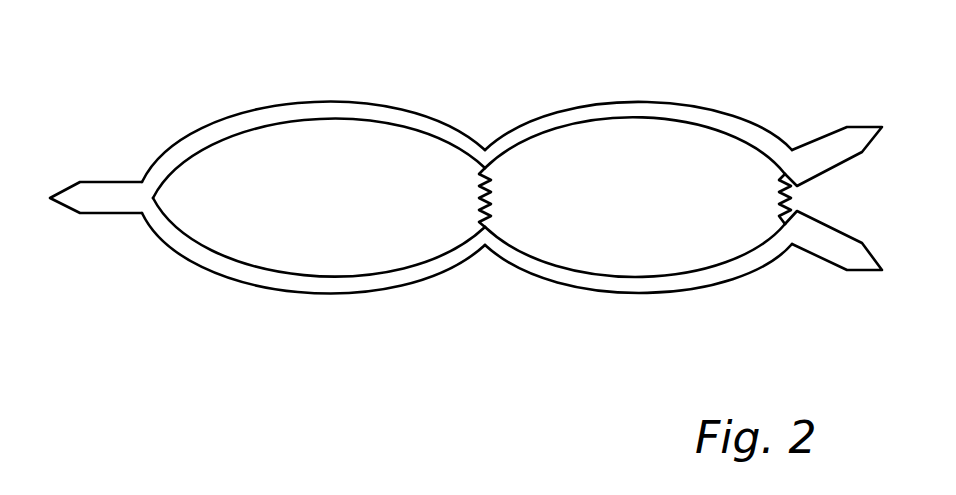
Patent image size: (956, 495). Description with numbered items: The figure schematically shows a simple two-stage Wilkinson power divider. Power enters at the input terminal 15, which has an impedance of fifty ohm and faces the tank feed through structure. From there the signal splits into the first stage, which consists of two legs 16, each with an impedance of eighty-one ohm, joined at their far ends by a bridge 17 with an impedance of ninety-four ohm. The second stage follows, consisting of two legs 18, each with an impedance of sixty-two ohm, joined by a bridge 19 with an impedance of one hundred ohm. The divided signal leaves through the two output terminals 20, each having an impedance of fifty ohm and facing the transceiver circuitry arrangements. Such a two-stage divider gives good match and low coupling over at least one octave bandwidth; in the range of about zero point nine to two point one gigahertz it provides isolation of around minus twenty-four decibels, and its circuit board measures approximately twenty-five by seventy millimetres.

The input terminal 15 is at (117, 198).
The legs of the first stage 16 is at (363, 113).
The bridge of the first stage 17 is at (487, 199).
The legs of the second stage 18 is at (648, 113).
The bridge of the second stage 19 is at (777, 205).
The output terminal 20 is at (837, 147).